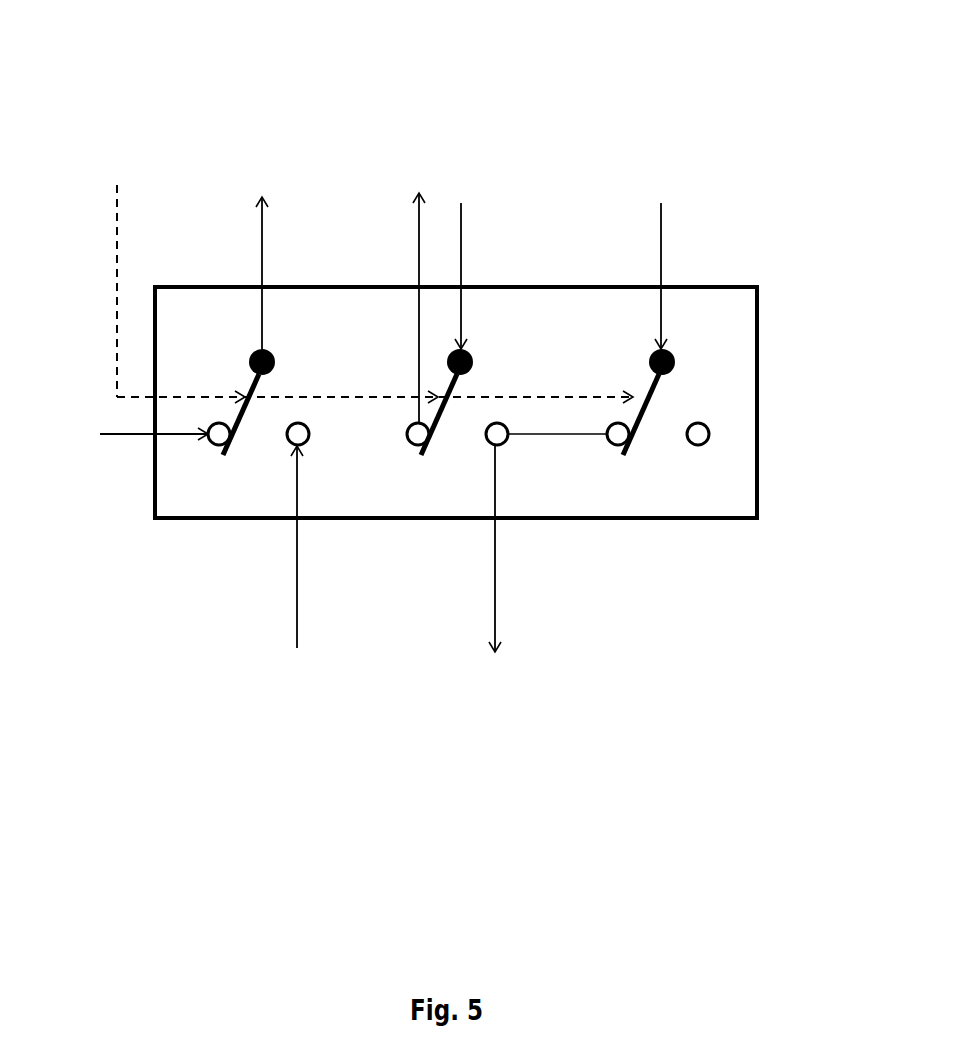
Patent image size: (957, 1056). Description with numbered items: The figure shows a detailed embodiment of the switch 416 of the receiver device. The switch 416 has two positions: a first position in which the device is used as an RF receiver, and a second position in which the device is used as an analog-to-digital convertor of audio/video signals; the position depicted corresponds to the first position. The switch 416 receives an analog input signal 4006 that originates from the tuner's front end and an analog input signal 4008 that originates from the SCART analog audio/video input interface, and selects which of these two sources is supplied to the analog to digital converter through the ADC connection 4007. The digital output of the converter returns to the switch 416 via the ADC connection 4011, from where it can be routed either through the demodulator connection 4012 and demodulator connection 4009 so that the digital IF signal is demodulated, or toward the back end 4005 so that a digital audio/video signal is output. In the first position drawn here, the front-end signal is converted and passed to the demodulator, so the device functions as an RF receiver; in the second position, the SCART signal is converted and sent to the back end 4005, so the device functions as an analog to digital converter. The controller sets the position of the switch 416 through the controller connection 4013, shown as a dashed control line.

The switch 416 is at (623, 519).
The back end 4005 is at (495, 580).
The analog input signal from front end 4006 is at (123, 437).
The ADC connection 4007 is at (500, 215).
The analog input signal from SCART interface 4008 is at (297, 578).
The demodulator connection 4009 is at (714, 192).
The ADC connection 4011 is at (301, 212).
The demodulator connection 4012 is at (474, 227).
The controller connection 4013 is at (365, 212).